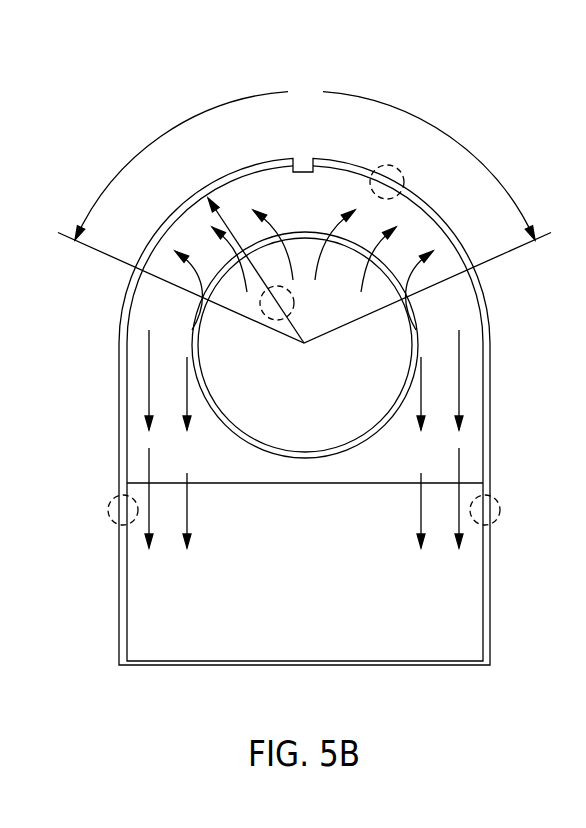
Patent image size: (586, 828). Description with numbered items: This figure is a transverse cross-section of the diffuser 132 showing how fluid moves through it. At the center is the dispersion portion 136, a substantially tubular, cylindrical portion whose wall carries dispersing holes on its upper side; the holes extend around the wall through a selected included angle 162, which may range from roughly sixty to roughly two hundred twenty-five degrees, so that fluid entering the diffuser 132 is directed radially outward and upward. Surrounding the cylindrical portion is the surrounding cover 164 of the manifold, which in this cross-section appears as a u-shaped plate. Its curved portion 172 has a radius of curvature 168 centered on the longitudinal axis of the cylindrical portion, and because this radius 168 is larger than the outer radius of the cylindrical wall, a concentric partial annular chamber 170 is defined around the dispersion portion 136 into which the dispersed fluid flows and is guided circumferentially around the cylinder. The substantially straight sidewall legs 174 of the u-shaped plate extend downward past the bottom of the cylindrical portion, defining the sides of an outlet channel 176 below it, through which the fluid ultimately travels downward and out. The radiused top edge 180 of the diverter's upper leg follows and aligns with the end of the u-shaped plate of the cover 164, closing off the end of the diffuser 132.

The diffuser 132 is at (458, 105).
The dispersion portion 136 is at (357, 445).
The selected included angle 162 is at (304, 211).
The surrounding cover 164 is at (492, 410).
The radius of curvature 168 is at (294, 306).
The partial annular chamber 170 is at (413, 235).
The curved portion 172 is at (403, 170).
The sidewall legs 174 is at (108, 510).
The outlet channel 176 is at (187, 628).
The radiused top edge 180 is at (240, 170).